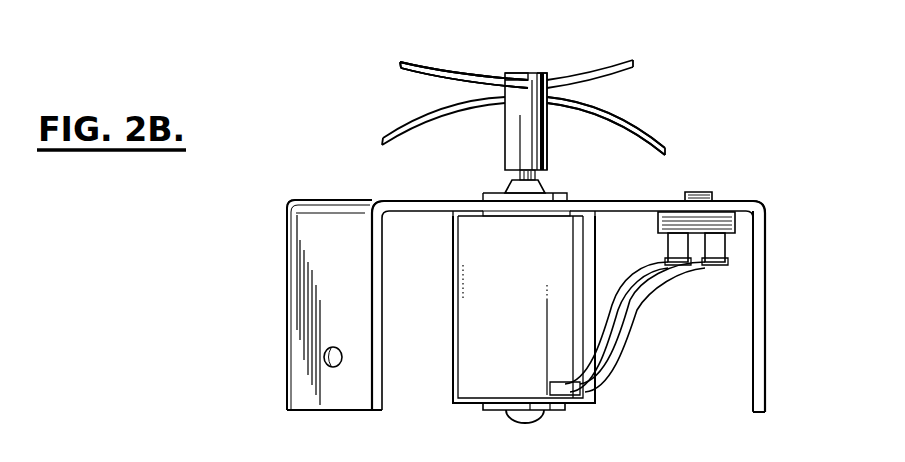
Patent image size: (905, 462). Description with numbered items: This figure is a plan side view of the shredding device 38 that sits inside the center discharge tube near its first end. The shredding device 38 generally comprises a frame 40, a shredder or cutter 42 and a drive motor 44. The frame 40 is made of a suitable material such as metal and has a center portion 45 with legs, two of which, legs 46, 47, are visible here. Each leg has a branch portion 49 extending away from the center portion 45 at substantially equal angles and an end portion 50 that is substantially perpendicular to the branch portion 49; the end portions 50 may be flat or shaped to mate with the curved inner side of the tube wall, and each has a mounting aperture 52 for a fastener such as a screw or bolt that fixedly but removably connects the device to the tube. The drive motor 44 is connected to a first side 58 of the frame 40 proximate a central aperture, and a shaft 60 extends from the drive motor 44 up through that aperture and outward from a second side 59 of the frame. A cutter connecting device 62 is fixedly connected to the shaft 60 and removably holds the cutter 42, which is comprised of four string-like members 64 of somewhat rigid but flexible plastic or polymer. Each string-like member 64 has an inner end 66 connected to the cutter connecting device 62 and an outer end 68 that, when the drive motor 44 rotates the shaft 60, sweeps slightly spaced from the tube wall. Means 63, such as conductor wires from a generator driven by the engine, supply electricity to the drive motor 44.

The shredding device 38 is at (258, 263).
The frame 40 is at (287, 301).
The cutter 42 is at (553, 78).
The drive motor 44 is at (595, 400).
The center portion 45 is at (463, 200).
The leg 46 is at (287, 210).
The leg 47 is at (765, 217).
The branch portion 49 is at (372, 203).
The end portion 50 is at (287, 363).
The mounting aperture 52 is at (331, 366).
The first side 58 is at (418, 212).
The second side 59 is at (418, 200).
The shaft 60 is at (540, 178).
The cutter connecting device 62 is at (514, 72).
The means for providing electricity 63 is at (690, 298).
The string-like member 64 is at (428, 112).
The inner end 66 is at (540, 74).
The outer end 68 is at (400, 62).